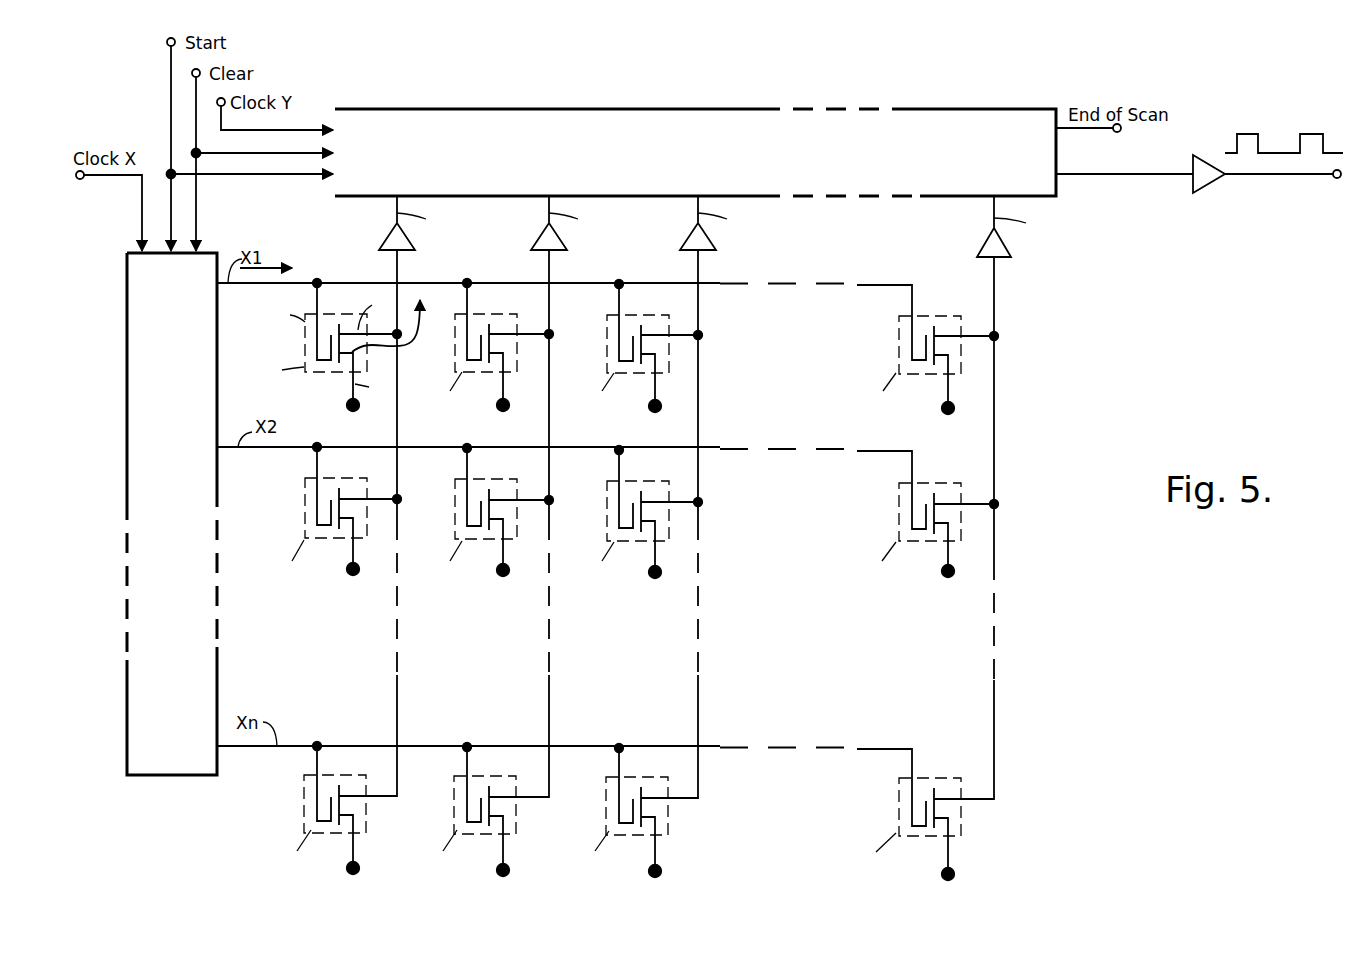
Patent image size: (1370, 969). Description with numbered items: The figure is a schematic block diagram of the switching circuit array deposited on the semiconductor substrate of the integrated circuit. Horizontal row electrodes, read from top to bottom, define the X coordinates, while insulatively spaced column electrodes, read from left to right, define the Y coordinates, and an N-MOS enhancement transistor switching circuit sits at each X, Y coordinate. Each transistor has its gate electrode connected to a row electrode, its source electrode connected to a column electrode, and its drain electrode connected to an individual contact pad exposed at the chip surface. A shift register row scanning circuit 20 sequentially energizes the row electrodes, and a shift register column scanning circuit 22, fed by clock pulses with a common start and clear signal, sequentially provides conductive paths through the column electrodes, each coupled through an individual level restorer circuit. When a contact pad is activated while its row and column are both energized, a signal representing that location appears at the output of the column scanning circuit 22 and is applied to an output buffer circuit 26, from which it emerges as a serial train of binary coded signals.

The shift register row scanning circuit 20 is at (179, 334).
The shift register column scanning circuit 22 is at (882, 164).
The output buffer circuit 26 is at (1196, 188).